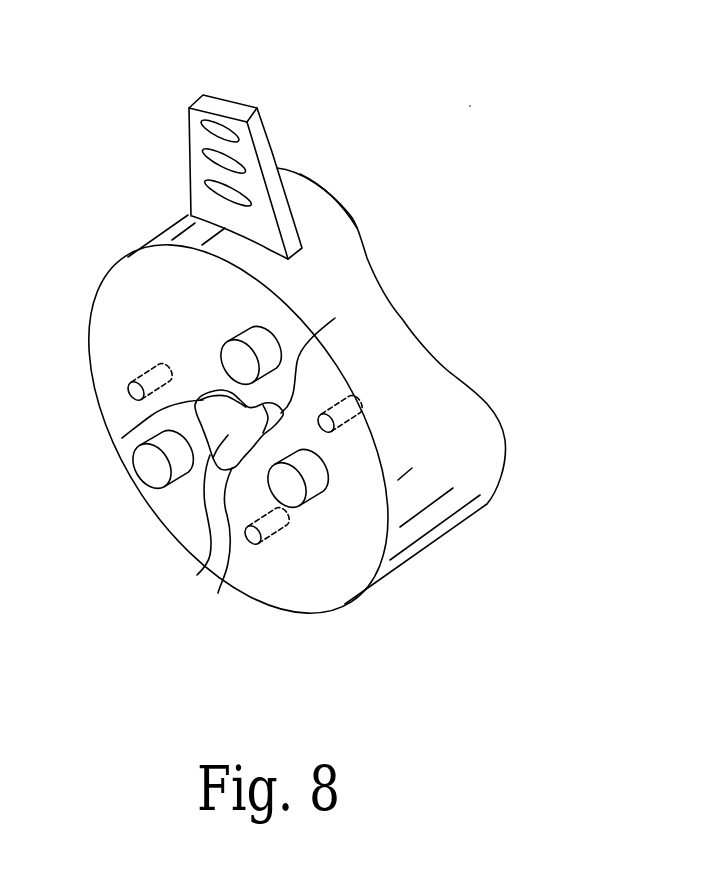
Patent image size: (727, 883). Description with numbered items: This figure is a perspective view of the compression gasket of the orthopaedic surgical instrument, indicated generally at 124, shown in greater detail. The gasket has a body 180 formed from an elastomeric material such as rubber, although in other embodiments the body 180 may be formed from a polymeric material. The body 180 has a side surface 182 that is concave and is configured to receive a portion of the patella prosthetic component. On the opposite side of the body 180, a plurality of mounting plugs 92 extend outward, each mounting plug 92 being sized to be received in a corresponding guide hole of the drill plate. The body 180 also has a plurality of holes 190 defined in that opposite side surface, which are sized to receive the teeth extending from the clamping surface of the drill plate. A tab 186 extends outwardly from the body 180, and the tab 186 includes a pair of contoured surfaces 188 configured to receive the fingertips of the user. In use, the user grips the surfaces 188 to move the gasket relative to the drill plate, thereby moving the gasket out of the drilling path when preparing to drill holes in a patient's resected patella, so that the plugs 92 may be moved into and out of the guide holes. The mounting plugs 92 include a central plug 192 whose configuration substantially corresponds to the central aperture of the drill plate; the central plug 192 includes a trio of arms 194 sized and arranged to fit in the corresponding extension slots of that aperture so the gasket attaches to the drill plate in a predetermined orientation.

The locking mechanism assembly 124 is at (470, 106).
The body 180 is at (438, 378).
The side surface 182 is at (357, 228).
The tab 186 is at (260, 127).
The contoured surfaces 188 is at (195, 144).
The holes 190 is at (131, 393).
The central plug 192 is at (206, 553).
The arms 194 is at (95, 440).
The mounting plugs 92 is at (237, 357).